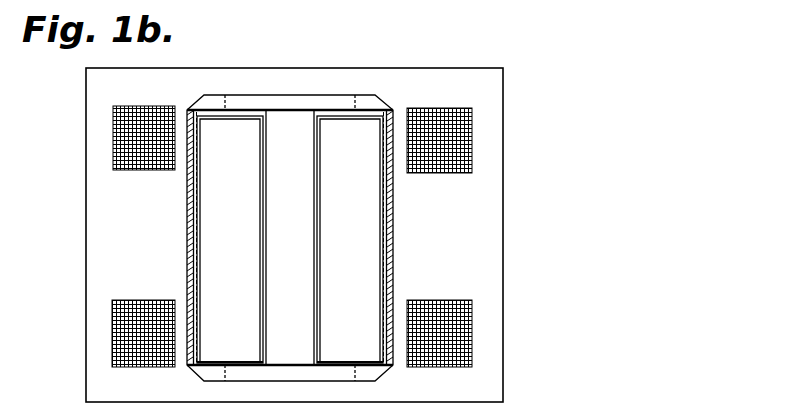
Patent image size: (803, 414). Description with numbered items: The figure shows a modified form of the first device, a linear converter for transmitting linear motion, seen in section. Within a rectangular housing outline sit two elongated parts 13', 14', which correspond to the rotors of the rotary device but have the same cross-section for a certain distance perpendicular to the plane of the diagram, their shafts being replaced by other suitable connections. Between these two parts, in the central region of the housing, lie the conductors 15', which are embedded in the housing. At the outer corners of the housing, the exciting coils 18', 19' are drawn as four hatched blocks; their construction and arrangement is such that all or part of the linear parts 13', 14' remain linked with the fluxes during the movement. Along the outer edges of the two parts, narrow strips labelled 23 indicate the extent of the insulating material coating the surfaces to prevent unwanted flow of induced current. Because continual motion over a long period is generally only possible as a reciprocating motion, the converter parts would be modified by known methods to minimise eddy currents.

The exciting coil 18' is at (160, 99).
The exciting coil 19' is at (454, 101).
The linear part 13' is at (233, 196).
The linear part 14' is at (366, 196).
The conductors 15' is at (301, 197).
The insulating material 23 is at (190, 220).